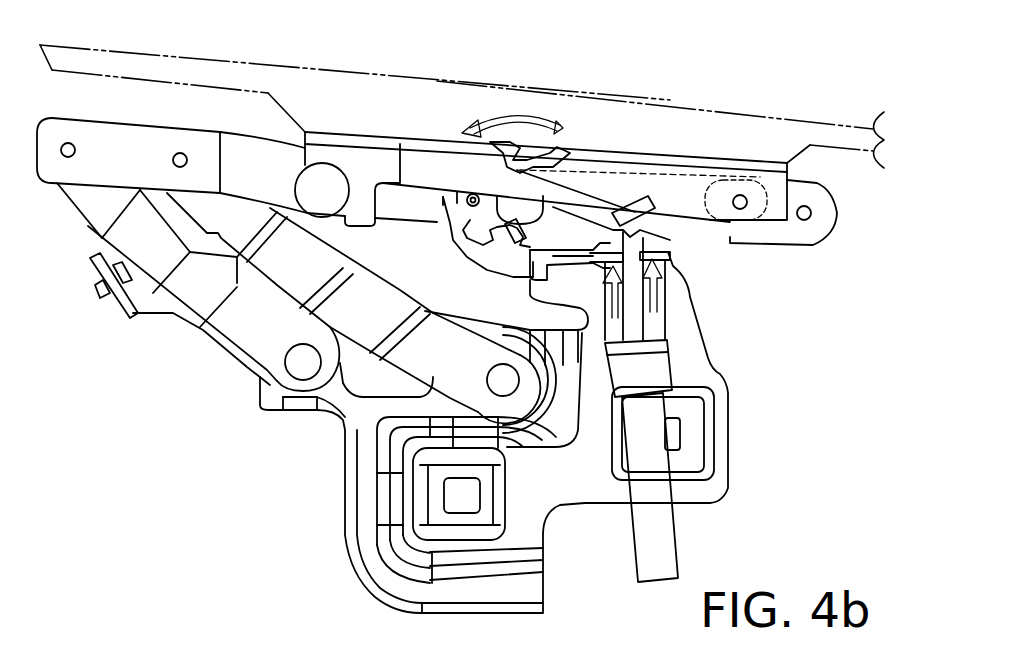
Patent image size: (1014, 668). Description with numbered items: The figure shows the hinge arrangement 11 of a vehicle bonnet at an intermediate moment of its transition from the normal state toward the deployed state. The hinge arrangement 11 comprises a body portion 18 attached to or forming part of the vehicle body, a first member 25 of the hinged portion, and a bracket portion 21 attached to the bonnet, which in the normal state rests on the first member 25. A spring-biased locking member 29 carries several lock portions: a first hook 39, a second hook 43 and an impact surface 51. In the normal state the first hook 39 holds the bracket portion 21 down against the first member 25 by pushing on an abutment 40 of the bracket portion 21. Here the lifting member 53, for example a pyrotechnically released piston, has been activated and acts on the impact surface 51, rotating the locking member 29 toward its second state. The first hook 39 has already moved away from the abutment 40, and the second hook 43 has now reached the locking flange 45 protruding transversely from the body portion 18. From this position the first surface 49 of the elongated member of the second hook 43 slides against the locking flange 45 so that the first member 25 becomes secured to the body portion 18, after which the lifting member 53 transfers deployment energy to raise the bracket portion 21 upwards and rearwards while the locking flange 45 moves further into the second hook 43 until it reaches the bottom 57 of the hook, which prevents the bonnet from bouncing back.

The hinge arrangement 11 is at (180, 393).
The body portion 18 is at (553, 460).
The bracket portion 21 is at (330, 158).
The first member 25 is at (253, 176).
The locking member 29 is at (612, 193).
The first hook 39 is at (520, 160).
The abutment 40 is at (593, 217).
The second hook 43 is at (477, 233).
The locking flange 45 is at (533, 250).
The first surface 49 is at (402, 155).
The impact surface 51 is at (673, 252).
The lifting member 53 is at (637, 318).
The bottom 57 is at (452, 240).